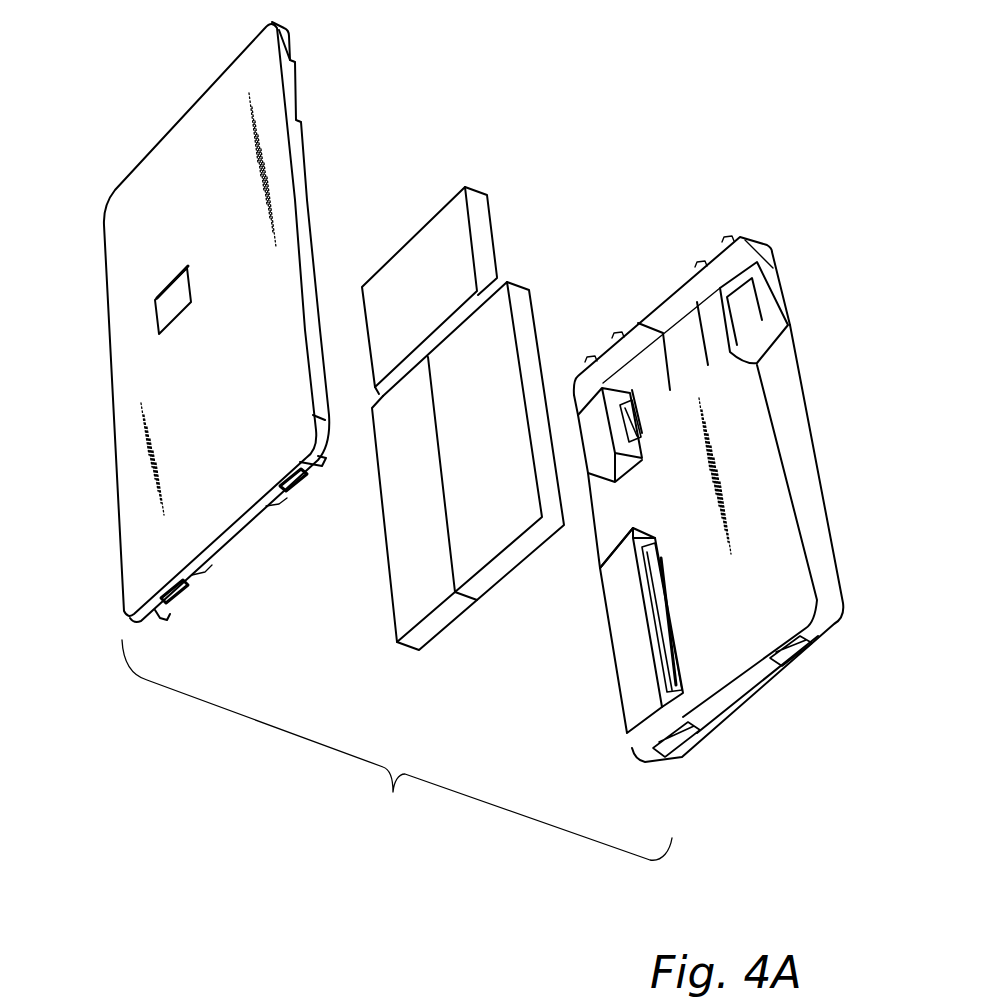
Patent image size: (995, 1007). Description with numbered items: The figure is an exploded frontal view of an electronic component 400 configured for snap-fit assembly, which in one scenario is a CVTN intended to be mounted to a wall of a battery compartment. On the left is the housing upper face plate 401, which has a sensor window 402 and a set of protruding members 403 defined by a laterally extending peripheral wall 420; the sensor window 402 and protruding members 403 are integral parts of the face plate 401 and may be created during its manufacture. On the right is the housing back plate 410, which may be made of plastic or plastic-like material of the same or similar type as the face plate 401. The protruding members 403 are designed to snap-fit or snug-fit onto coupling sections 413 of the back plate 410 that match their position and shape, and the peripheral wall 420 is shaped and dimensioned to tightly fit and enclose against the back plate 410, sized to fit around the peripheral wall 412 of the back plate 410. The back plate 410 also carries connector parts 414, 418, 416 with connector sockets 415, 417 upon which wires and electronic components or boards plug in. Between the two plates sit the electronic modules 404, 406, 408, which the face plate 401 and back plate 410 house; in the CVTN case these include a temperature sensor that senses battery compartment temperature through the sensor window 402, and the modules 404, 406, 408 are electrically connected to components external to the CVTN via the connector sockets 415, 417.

The electronic component 400 is at (397, 750).
The housing upper face plate 401 is at (214, 55).
The sensor window 402 is at (173, 312).
The protruding members 403 is at (320, 467).
The electronic module 404 is at (456, 296).
The electronic module 406 is at (438, 498).
The electronic module 408 is at (518, 456).
The housing back plate 410 is at (762, 201).
The peripheral wall 412 is at (801, 456).
The coupling sections 413 is at (787, 665).
The connector part 414 is at (596, 447).
The connector socket 415 is at (637, 417).
The connector part 416 is at (623, 667).
The connector socket 417 is at (668, 607).
The connector part 418 is at (752, 303).
The peripheral wall 420 is at (298, 173).